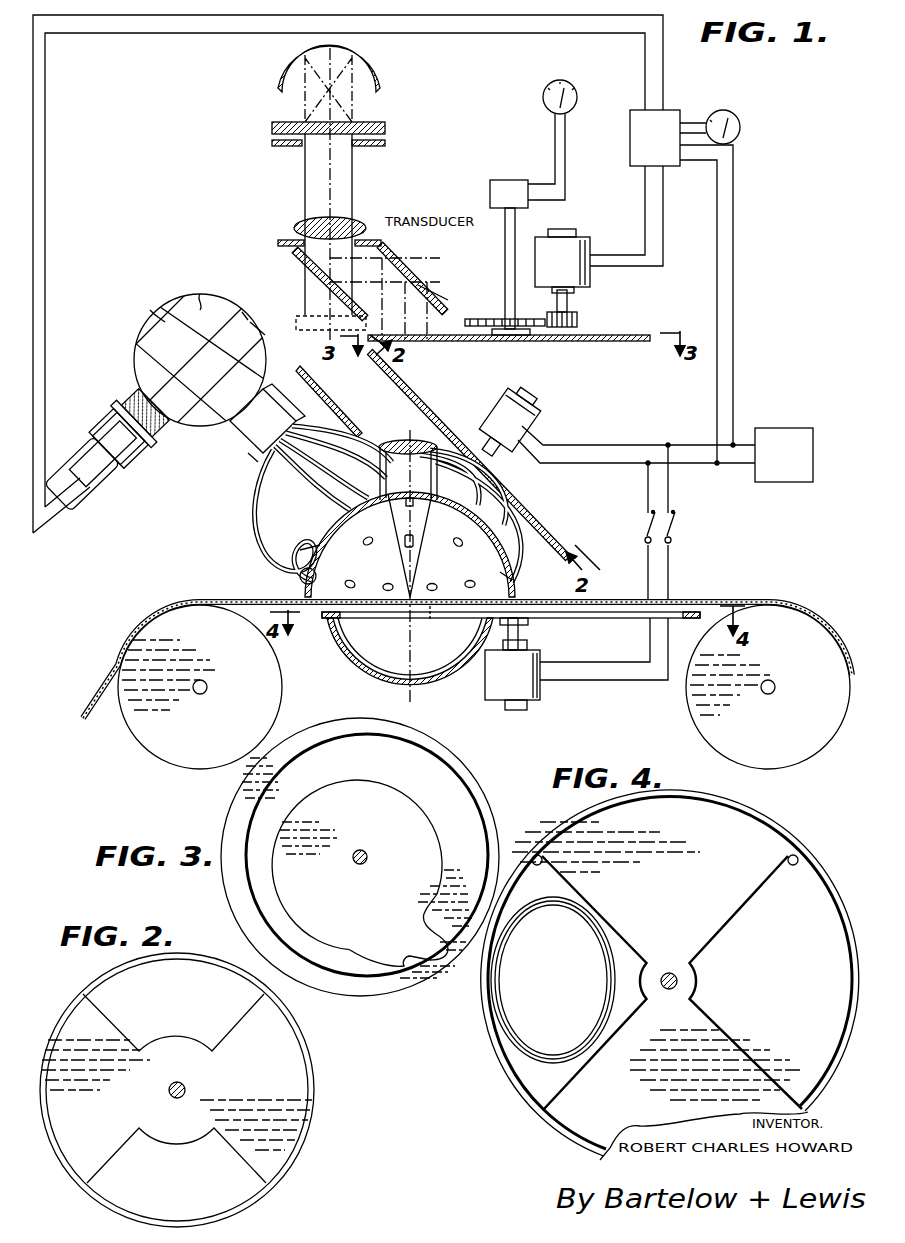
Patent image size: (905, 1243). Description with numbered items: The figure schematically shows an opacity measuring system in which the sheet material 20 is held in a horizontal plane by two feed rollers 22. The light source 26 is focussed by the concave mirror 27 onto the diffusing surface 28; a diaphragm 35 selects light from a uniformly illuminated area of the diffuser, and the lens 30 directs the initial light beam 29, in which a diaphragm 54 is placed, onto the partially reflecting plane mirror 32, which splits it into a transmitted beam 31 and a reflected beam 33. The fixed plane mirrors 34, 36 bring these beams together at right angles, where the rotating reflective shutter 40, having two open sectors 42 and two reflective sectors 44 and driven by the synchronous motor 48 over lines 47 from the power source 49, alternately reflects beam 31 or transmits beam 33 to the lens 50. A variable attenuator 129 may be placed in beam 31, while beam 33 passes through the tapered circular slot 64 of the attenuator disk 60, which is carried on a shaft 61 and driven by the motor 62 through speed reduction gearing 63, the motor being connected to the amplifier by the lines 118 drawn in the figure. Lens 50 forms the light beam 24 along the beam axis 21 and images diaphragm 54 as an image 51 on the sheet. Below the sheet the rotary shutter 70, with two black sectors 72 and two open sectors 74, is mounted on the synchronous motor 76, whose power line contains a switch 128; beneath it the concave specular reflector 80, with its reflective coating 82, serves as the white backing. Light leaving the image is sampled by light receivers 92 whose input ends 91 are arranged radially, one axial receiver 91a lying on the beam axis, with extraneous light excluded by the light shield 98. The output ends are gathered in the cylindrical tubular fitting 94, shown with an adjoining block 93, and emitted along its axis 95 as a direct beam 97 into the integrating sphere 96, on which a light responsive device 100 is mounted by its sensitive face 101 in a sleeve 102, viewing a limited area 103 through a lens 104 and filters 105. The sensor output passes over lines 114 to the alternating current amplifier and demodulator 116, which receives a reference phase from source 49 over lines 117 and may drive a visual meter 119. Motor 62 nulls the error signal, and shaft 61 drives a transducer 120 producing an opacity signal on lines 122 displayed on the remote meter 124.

In FIG. 1, the sheet material 20 is at (728, 600).
In FIG. 1, the beam axis 21 is at (428, 372).
In FIG. 1, the feed rollers 22 is at (272, 678).
In FIG. 1, the light beam 24 is at (400, 560).
In FIG. 1, the light source 26 is at (352, 58).
In FIG. 1, the concave mirror 27 is at (290, 84).
In FIG. 1, the diffusing surface 28 is at (282, 128).
In FIG. 1, the initial light beam 29 is at (355, 215).
In FIG. 1, the lens 30 is at (296, 228).
In FIG. 1, the transmitted beam 31 is at (305, 300).
In FIG. 1, the partially reflecting plane mirror 32 is at (297, 256).
In FIG. 1, the reflected beam 33 is at (440, 290).
In FIG. 1, the fixed plane mirror 34 is at (300, 368).
In FIG. 1, the diaphragm 35 is at (282, 146).
In FIG. 1, the fixed plane mirror 36 is at (396, 258).
In FIG. 1, the rotating reflective shutter 40 is at (530, 522).
In FIG. 2, the rotating reflective shutter 40 is at (226, 958).
In FIG. 1, the open sectors 42 is at (560, 536).
In FIG. 2, the open sectors 42 is at (100, 990).
In FIG. 2, the reflective sectors 44 is at (308, 1070).
In FIG. 1, the lines 47 is at (630, 452).
In FIG. 1, the synchronous motor 48 is at (540, 414).
In FIG. 1, the power source 49 is at (797, 436).
In FIG. 1, the lens 50 is at (362, 448).
In FIG. 1, the image 51 is at (434, 618).
In FIG. 1, the diaphragm 54 is at (278, 243).
In FIG. 1, the attenuator disk 60 is at (560, 342).
In FIG. 3, the attenuator disk 60 is at (480, 774).
In FIG. 1, the shaft 61 is at (505, 297).
In FIG. 3, the shaft 61 is at (368, 858).
In FIG. 1, the motor 62 is at (580, 240).
In FIG. 1, the speed reduction gearing 63 is at (578, 318).
In FIG. 1, the tapered circular slot 64 is at (438, 344).
In FIG. 3, the tapered circular slot 64 is at (258, 816).
In FIG. 1, the rotary shutter 70 is at (612, 620).
In FIG. 4, the rotary shutter 70 is at (842, 902).
In FIG. 4, the black sectors 72 is at (706, 804).
In FIG. 1, the open sectors 74 is at (326, 622).
In FIG. 4, the open sectors 74 is at (542, 858).
In FIG. 1, the synchronous motor 76 is at (540, 700).
In FIG. 1, the concave specular reflector 80 is at (392, 684).
In FIG. 4, the concave specular reflector 80 is at (500, 1000).
In FIG. 1, the reflective coating 82 is at (358, 650).
In FIG. 4, the reflective coating 82 is at (508, 1034).
In FIG. 1, the input ends 91 is at (498, 568).
In FIG. 1, the axial receiver 91a is at (402, 536).
In FIG. 1, the light receivers 92 is at (266, 538).
In FIG. 1, the light exit block 93 is at (250, 445).
In FIG. 1, the cylindrical tubular fitting 94 is at (255, 458).
In FIG. 1, the axis 95 is at (150, 310).
In FIG. 1, the integrating sphere 96 is at (136, 356).
In FIG. 1, the direct beam 97 is at (203, 290).
In FIG. 1, the light shield 98 is at (298, 574).
In FIG. 1, the light responsive device 100 is at (108, 494).
In FIG. 1, the sensitive face 101 is at (126, 478).
In FIG. 1, the sleeve 102 is at (92, 442).
In FIG. 1, the limited area 103 is at (242, 314).
In FIG. 1, the lens 104 is at (130, 396).
In FIG. 1, the filters 105 is at (160, 440).
In FIG. 1, the lines 114 is at (45, 296).
In FIG. 1, the alternating current amplifier and demodulator 116 is at (668, 112).
In FIG. 1, the lines 117 is at (733, 328).
In FIG. 1, the motor lead 118 is at (648, 245).
In FIG. 1, the visual meter 119 is at (740, 127).
In FIG. 1, the transducer 120 is at (528, 180).
In FIG. 1, the lines 122 is at (555, 138).
In FIG. 1, the remote meter 124 is at (564, 80).
In FIG. 1, the switch 128 is at (690, 530).
In FIG. 1, the variable attenuator 129 is at (300, 330).